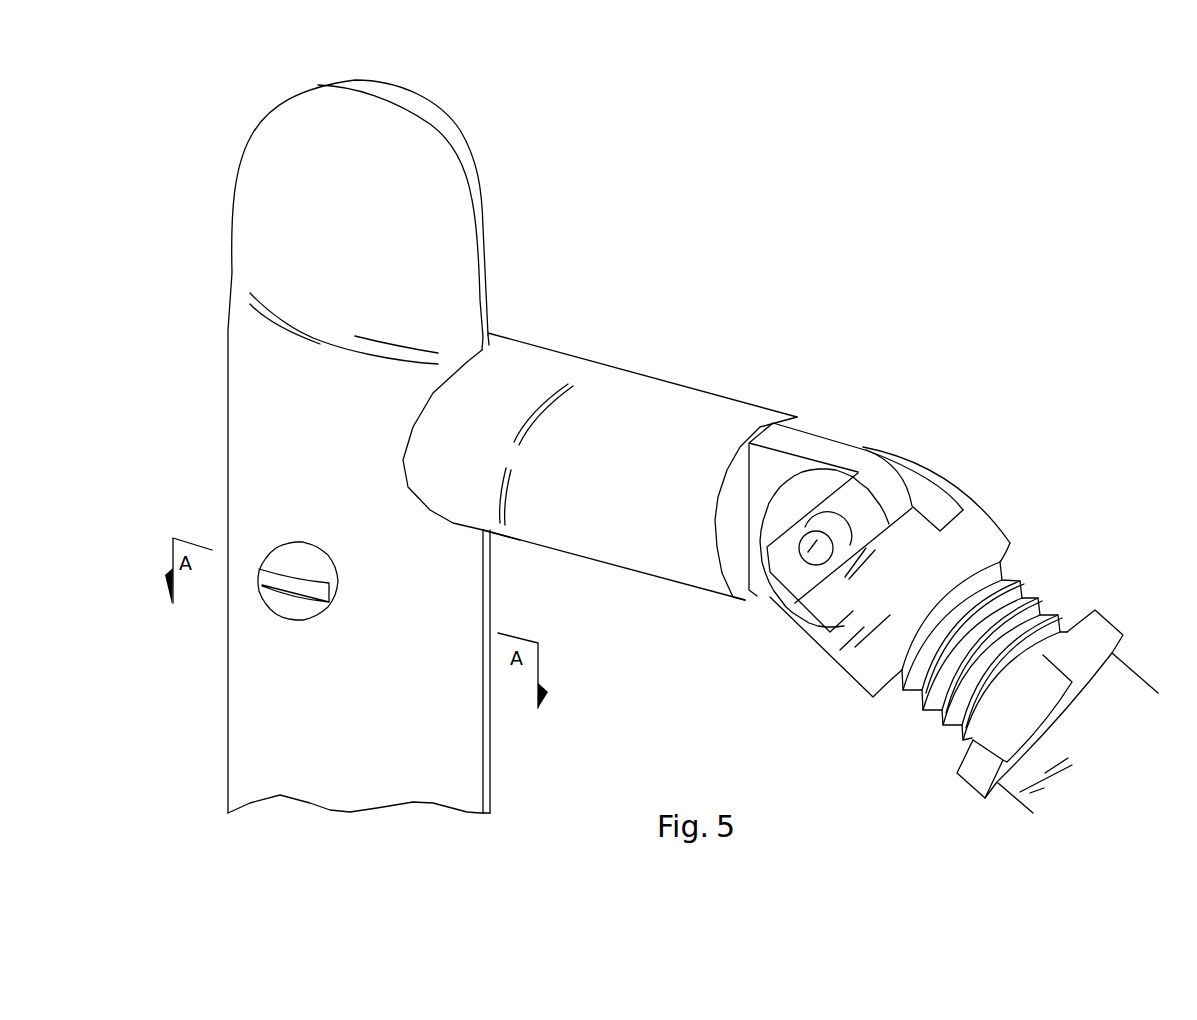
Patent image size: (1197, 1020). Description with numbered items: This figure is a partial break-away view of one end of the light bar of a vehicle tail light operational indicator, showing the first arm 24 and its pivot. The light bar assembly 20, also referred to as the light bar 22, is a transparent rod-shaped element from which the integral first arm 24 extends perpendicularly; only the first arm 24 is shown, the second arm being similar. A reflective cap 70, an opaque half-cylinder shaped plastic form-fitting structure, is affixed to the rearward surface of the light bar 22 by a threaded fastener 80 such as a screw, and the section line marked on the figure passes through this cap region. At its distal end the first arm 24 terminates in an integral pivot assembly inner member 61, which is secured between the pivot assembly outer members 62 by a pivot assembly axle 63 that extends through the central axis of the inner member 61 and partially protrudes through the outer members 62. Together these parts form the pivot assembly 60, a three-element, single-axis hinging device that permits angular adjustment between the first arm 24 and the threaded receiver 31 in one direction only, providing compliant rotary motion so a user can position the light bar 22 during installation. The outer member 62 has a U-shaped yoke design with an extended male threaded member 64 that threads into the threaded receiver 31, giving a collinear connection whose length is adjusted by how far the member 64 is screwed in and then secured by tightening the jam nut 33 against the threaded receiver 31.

The light bar assembly 20 is at (518, 276).
The light bar 22 is at (448, 136).
The first arm 24 is at (552, 349).
The threaded receiver 31 is at (1125, 688).
The jam nut 33 is at (1103, 632).
The pivot assembly 60 is at (958, 582).
The pivot assembly inner member 61 is at (800, 446).
The pivot assembly outer member 62 is at (945, 479).
The pivot assembly axle 63 is at (806, 554).
The extended male threaded member 64 is at (1013, 593).
The reflective cap 70 is at (258, 276).
The threaded fastener 80 is at (286, 560).